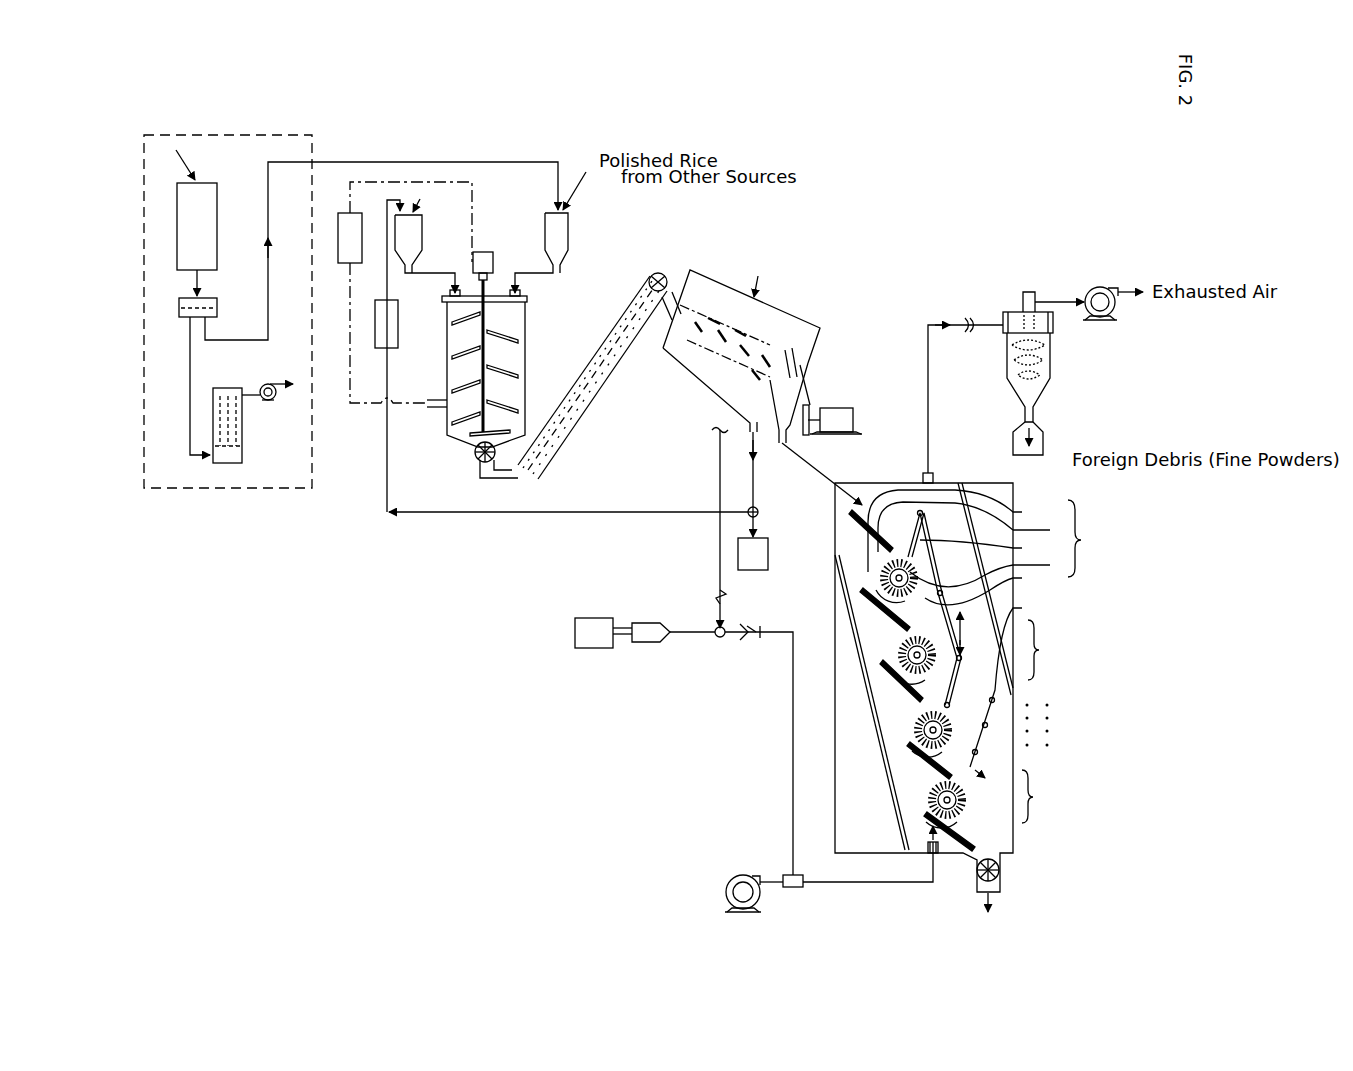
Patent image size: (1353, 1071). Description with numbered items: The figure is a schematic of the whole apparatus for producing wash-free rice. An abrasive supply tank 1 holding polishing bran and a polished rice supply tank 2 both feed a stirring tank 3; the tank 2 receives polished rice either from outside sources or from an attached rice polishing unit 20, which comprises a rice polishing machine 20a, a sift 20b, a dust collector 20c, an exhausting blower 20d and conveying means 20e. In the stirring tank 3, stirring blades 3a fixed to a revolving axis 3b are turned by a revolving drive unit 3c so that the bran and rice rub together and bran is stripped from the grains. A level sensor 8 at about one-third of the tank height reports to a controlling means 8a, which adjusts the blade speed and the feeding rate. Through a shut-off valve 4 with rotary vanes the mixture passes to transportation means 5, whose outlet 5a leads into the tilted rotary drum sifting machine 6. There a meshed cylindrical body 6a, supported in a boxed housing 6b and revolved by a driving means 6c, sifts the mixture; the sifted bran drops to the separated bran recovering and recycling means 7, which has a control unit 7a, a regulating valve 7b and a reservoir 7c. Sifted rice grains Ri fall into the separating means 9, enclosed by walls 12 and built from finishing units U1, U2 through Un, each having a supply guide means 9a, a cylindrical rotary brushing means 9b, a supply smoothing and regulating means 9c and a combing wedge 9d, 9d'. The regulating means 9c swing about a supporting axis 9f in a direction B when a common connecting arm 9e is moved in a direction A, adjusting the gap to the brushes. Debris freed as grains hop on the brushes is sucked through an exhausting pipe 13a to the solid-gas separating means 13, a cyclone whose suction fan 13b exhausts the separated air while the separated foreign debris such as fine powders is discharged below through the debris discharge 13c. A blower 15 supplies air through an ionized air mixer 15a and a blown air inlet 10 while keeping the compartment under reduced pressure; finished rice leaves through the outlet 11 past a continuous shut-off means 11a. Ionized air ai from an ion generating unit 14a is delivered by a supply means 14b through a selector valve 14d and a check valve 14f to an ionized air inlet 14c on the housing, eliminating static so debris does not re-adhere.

The abrasive supply tank 1 is at (420, 236).
The polished rice supply tank 2 is at (566, 232).
The stirring tank 3 is at (486, 363).
The stirring blades 3a is at (505, 400).
The revolving axis 3b is at (482, 372).
The revolving drive unit 3c is at (487, 253).
The shut-off valve 4 is at (476, 458).
The transportation means 5 is at (630, 322).
The outlet of the transportation means 5a is at (667, 283).
The rotary drum sifting machine 6 is at (763, 344).
The cylindrical body 6a is at (770, 343).
The boxed housing 6b is at (718, 278).
The driving means 6c is at (838, 408).
The separated bran recovering and recycling means 7 is at (640, 512).
The control unit 7a is at (376, 340).
The regulating valve 7b is at (765, 484).
The reservoir 7c is at (752, 571).
The level sensor 8 is at (436, 408).
The controlling means 8a is at (338, 234).
The separating means 9 is at (902, 475).
The supply guide means 9a is at (1042, 528).
The cylindrical rotary brushing means 9b is at (991, 570).
The supply smoothing and regulating means 9c is at (982, 546).
The combing wedge 9d is at (948, 596).
The combing wedge 9d' is at (932, 771).
The common connecting arm 9e is at (1008, 687).
The supporting axis 9f is at (983, 585).
The blown air inlet 10 is at (917, 852).
The outlet 11 is at (982, 889).
The continuous shut-off means 11a is at (1000, 866).
The walls 12 is at (975, 491).
The solid-gas separating means 13 is at (1053, 328).
The exhausting pipe 13a is at (960, 322).
The suction fan 13b is at (1093, 289).
The debris collector 13c is at (1043, 441).
The ion generating unit 14a is at (590, 618).
The supply means 14b is at (645, 623).
The ionized air inlet 14c is at (765, 307).
The selector valve 14d is at (716, 637).
The check valve 14f is at (752, 640).
The blower 15 is at (738, 877).
The ionized air mixer 15a is at (797, 888).
The rice polishing unit 20 is at (232, 130).
The rice polishing machine 20a is at (208, 182).
The sift 20b is at (184, 298).
The dust collector 20c is at (242, 442).
The exhausting blower 20d is at (272, 401).
The conveying means 20e is at (268, 282).
The rice grains Ri is at (912, 572).
The finishing unit U1 is at (1088, 538).
The finishing unit U2 is at (1047, 650).
The finishing unit Un is at (1041, 796).
The direction A is at (970, 633).
The direction B is at (918, 551).
The ionized air ai is at (718, 472).